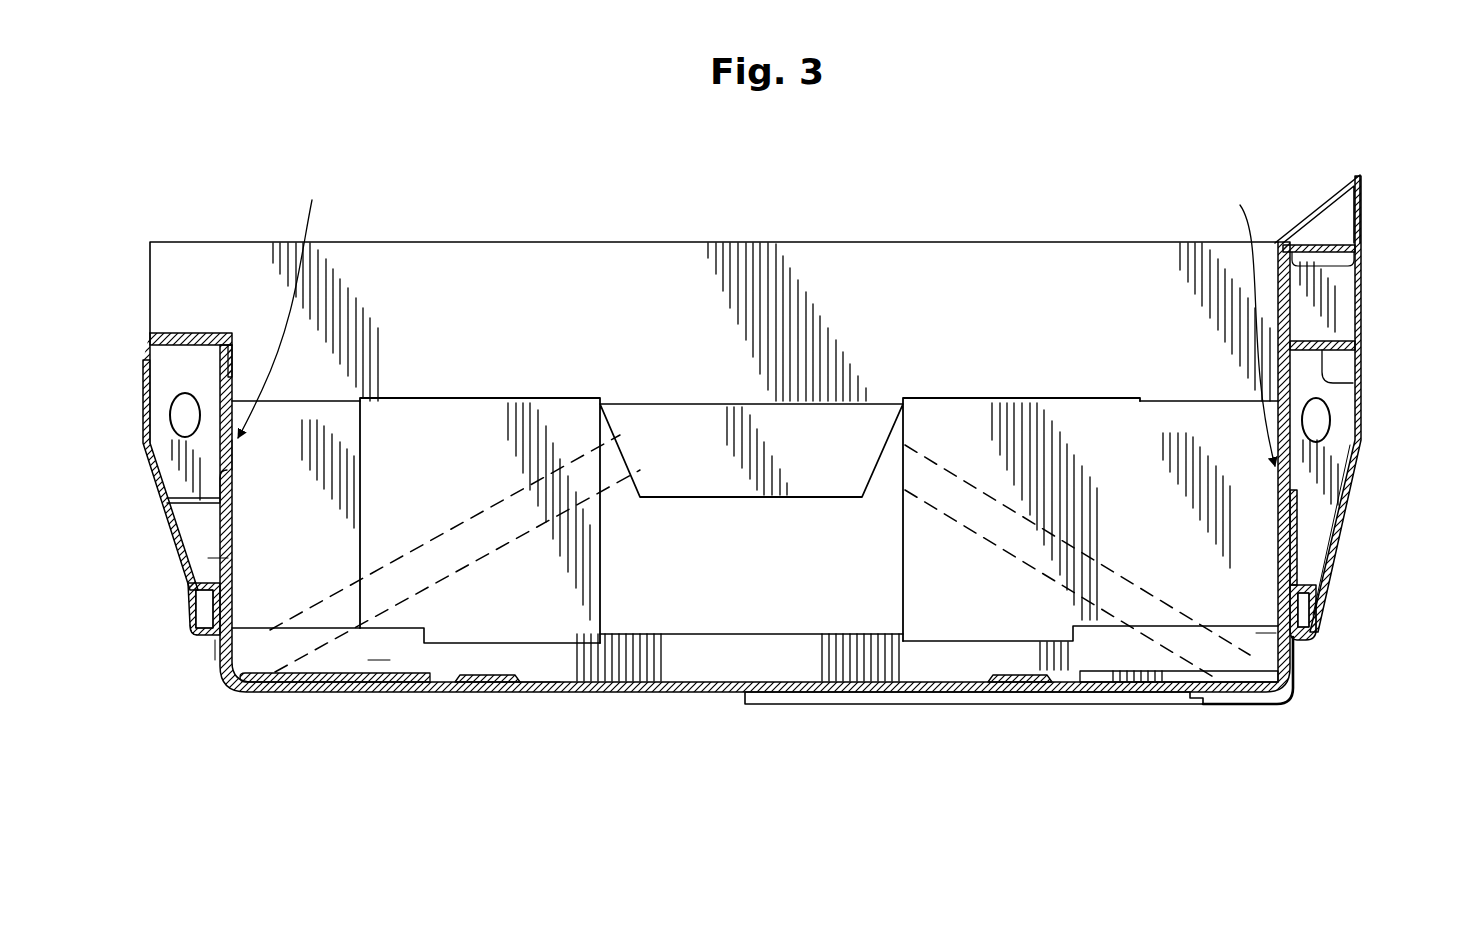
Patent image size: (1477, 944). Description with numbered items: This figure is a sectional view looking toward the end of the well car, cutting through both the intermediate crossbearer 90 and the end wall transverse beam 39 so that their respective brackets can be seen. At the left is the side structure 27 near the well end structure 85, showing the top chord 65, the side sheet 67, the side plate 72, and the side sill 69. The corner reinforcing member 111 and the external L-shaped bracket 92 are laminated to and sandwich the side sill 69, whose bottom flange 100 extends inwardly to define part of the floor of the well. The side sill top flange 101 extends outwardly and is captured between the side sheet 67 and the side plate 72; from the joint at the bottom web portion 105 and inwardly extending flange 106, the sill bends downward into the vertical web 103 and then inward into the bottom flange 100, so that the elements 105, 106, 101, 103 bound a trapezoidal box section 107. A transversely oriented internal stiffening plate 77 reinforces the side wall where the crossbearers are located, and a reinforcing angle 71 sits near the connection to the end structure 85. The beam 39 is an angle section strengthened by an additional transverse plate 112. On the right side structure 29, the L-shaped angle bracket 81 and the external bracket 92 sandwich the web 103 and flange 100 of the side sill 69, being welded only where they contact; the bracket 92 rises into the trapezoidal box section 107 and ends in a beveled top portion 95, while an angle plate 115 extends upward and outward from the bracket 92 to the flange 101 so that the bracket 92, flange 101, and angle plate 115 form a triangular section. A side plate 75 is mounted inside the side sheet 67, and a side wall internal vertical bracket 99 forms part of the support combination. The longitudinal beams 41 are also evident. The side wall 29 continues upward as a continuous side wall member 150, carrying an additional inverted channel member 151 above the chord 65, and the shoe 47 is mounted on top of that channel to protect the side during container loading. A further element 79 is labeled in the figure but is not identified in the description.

The side structure 27 is at (147, 400).
The side structure 29 is at (1362, 345).
The end wall transverse beam 39 is at (613, 457).
The longitudinal beams 41 is at (460, 670).
The shoe 47 is at (1327, 196).
The top chord 65 is at (182, 348).
The side sheet 67 is at (147, 425).
The side sill 69 is at (252, 692).
The reinforcing angle 71 is at (172, 530).
The side plate 72 is at (294, 308).
The side plate 75 is at (1237, 327).
The internal stiffening plate 77 is at (165, 465).
The panel wall 79 is at (233, 470).
The L-shaped angle bracket 81 is at (1273, 622).
The well end structure 85 is at (952, 257).
The intermediate crossbearer 90 is at (1022, 705).
The external L-shaped bracket 92 is at (1296, 665).
The beveled top portion 95 is at (1330, 530).
The side wall internal vertical bracket 99 is at (1300, 503).
The bottom flange 100 is at (340, 692).
The side sill top flange 101 is at (195, 588).
The web 103 is at (222, 558).
The bottom web portion 105 is at (190, 618).
The inwardly extending flange 106 is at (210, 637).
The trapezoidal box section 107 is at (203, 607).
The corner reinforcing member 111 is at (373, 660).
The transverse plate 112 is at (528, 693).
The angle plate 115 is at (1318, 618).
The continuous side wall member 150 is at (1362, 290).
The inverted channel member 151 is at (1350, 235).